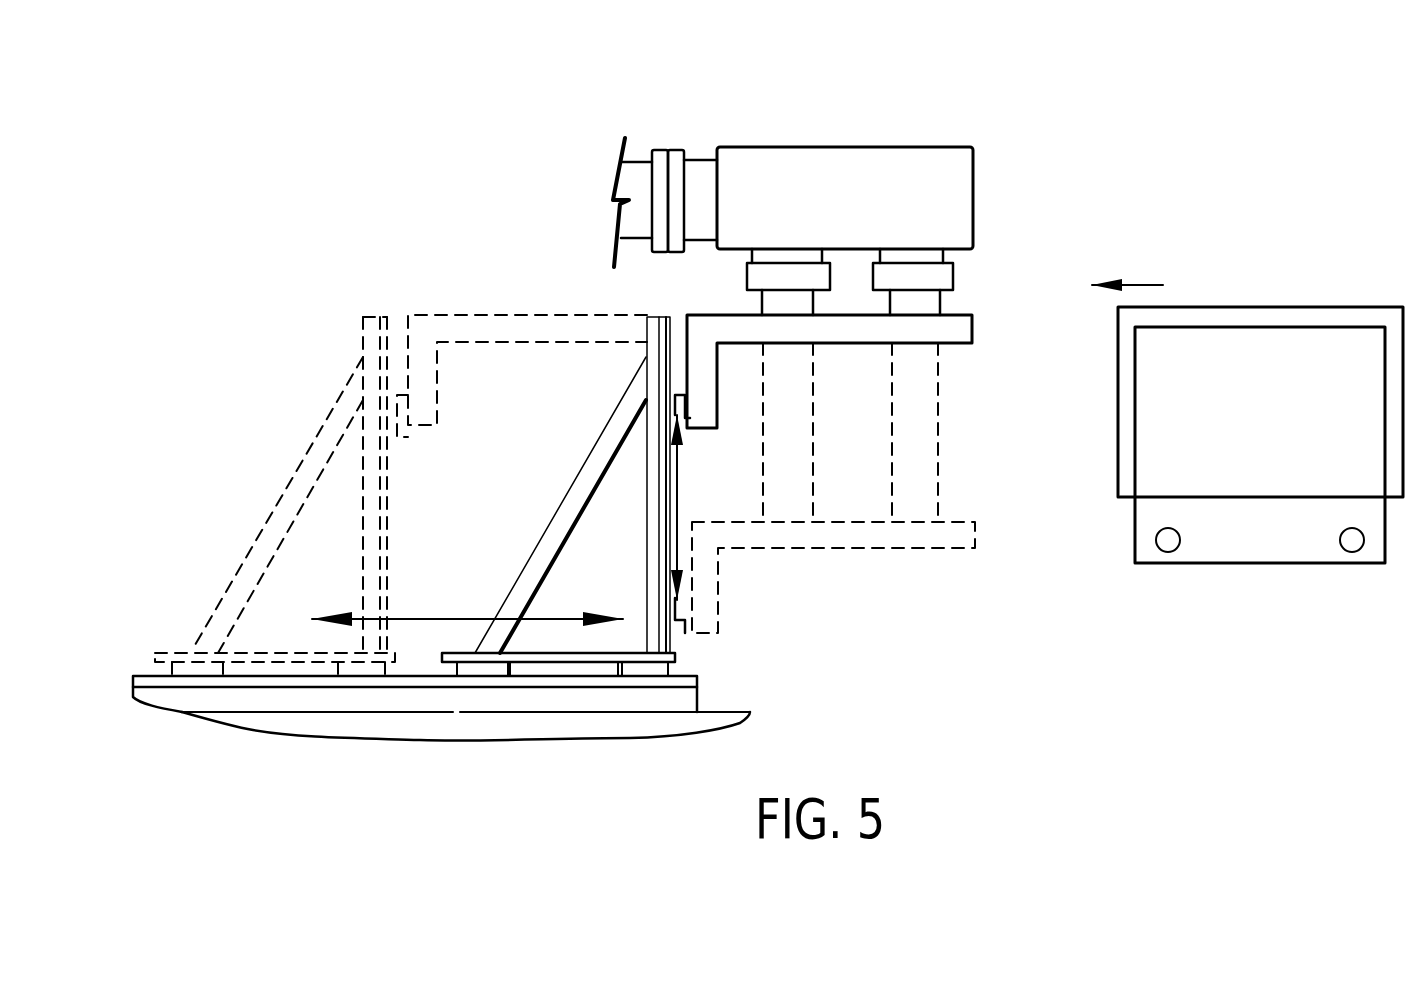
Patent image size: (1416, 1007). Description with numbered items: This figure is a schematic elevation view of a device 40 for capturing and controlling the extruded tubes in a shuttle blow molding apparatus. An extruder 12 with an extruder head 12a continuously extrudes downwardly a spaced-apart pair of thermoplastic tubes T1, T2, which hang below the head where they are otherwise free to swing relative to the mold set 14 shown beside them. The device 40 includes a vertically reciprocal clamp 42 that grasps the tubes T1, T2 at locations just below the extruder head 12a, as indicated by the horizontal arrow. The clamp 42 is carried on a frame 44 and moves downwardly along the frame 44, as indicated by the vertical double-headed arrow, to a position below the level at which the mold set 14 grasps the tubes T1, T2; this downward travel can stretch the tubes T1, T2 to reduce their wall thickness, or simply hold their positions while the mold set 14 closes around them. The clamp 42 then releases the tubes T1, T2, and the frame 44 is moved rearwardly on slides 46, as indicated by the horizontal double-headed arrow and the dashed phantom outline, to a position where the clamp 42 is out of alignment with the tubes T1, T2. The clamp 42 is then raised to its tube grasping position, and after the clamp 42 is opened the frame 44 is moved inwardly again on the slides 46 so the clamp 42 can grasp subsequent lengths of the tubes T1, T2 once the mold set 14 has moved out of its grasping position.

The extruder 12 is at (835, 193).
The extruder head 12a is at (893, 168).
The mold set 14 is at (1117, 486).
The tube capturing device 40 is at (630, 415).
The vertically reciprocal clamp 42 is at (973, 330).
The frame 44 is at (570, 505).
The slides 46 is at (690, 697).
The extruded tube T1 is at (928, 307).
The extruded tube T2 is at (762, 305).